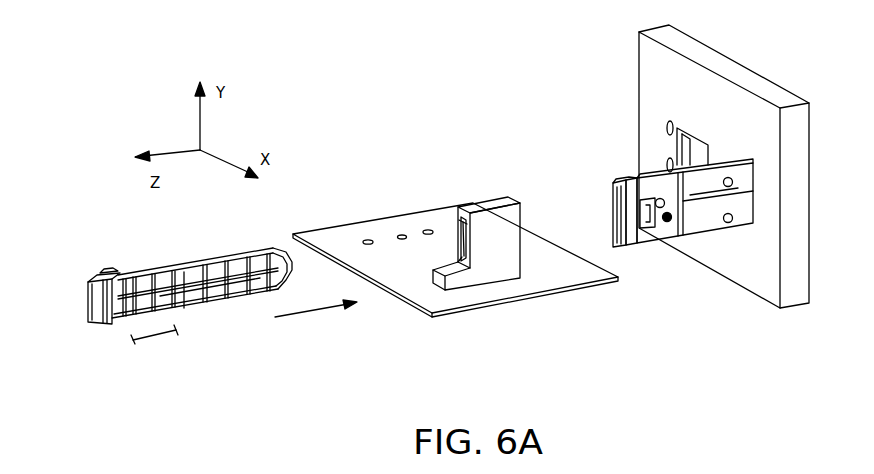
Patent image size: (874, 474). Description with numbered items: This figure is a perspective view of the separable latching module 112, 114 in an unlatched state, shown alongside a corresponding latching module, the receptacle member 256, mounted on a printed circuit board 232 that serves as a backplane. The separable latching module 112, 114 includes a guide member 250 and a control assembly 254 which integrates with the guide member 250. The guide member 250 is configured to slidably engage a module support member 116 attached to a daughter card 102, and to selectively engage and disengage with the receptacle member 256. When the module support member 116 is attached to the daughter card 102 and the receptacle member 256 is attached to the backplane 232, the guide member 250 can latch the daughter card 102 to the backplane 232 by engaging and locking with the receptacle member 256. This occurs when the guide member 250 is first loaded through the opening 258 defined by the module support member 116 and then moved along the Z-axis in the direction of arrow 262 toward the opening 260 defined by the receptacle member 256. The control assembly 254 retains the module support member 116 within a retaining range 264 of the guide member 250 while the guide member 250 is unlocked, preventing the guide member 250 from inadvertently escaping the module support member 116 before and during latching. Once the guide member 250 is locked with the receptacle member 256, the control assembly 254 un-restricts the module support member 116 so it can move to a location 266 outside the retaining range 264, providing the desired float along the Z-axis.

The separable latching module 112 is at (66, 197).
The separable latching module 114 is at (69, 157).
The guide member 250 is at (141, 272).
The retaining range 264 is at (154, 347).
The location outside the retaining range 266 is at (188, 333).
The control assembly 254 is at (226, 320).
The arrow 262 is at (318, 311).
The daughter card 102 is at (549, 294).
The module support member 116 is at (488, 204).
The opening 258 is at (437, 210).
The printed circuit board (backplane) 232 is at (774, 92).
The opening 260 is at (594, 195).
The receptacle member (latching module) 256 is at (640, 245).